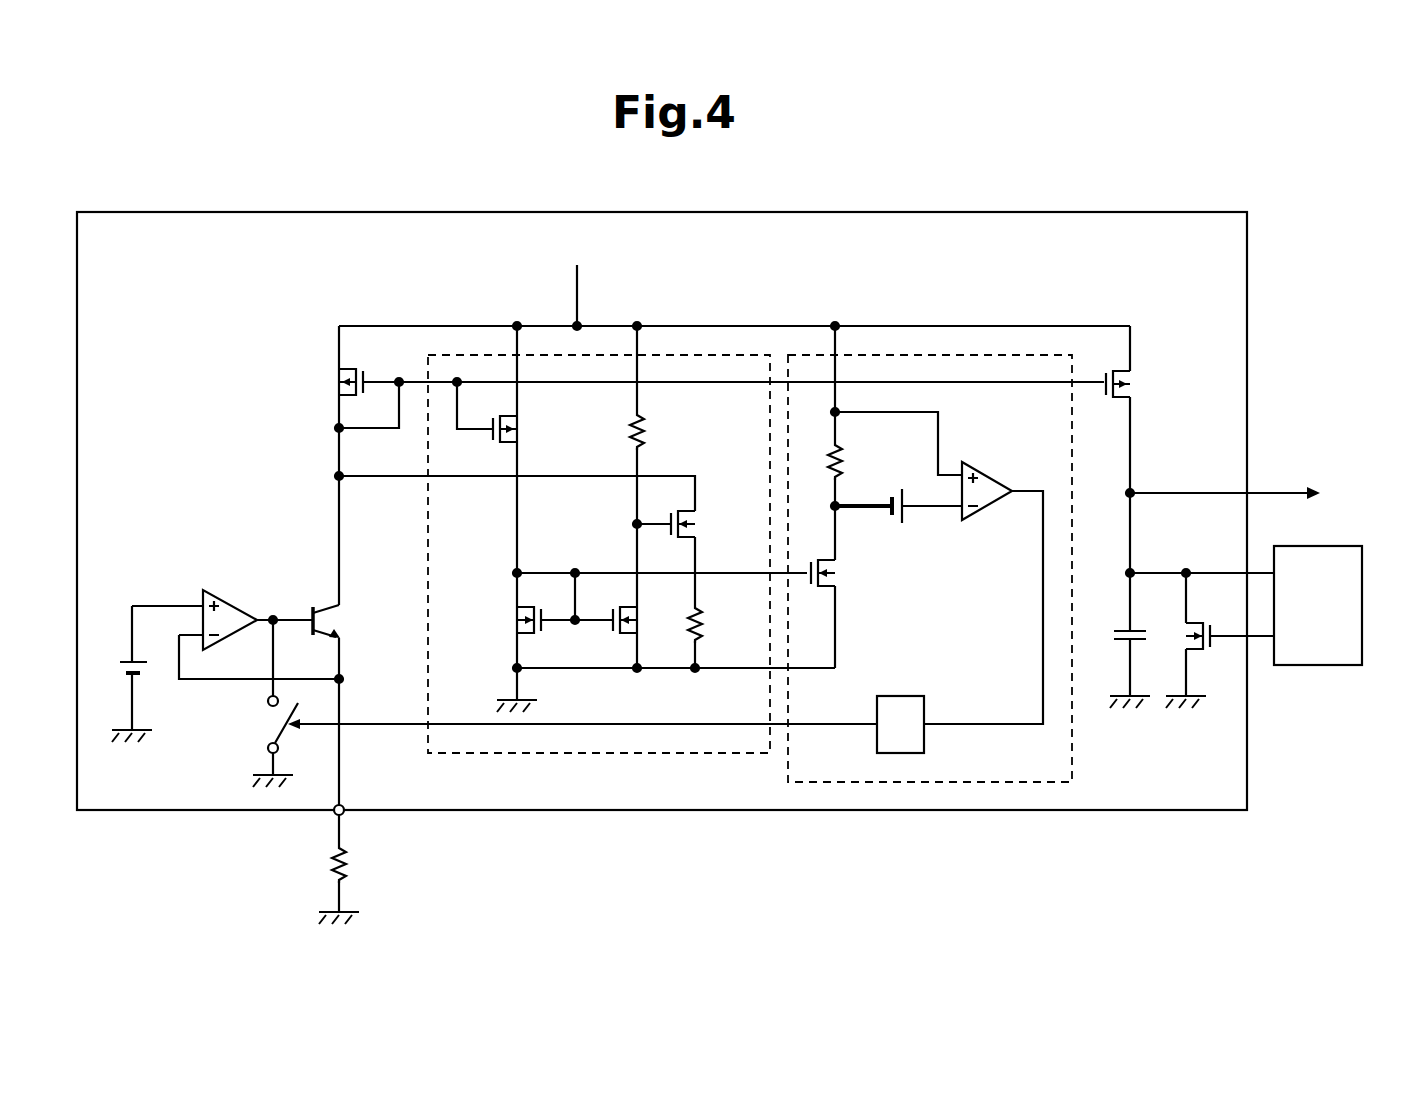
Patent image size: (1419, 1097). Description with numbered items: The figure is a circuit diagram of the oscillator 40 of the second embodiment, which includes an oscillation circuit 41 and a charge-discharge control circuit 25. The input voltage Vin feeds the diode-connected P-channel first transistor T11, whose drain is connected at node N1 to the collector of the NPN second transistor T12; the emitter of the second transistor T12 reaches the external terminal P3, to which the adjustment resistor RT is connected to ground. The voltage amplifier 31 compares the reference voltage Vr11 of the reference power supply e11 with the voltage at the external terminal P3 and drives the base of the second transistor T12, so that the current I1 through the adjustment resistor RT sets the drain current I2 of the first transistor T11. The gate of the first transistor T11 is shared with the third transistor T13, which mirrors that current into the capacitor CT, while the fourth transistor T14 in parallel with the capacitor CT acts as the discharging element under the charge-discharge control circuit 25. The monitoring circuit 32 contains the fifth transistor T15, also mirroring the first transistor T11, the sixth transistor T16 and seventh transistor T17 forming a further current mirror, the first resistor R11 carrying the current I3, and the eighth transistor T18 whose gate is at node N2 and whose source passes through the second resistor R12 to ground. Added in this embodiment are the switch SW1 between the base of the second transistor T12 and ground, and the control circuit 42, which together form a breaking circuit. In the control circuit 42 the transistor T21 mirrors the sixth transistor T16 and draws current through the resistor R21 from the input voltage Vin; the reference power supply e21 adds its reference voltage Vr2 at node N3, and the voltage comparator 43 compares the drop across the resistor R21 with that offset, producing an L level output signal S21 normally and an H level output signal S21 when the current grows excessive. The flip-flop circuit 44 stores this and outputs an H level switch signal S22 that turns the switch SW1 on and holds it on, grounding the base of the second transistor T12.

The oscillator 40 is at (1353, 348).
The oscillation circuit 41 is at (1247, 372).
The charge-discharge control circuit 25 is at (1340, 546).
The voltage amplifier 31 is at (236, 590).
The monitoring circuit 32 is at (735, 355).
The control circuit (switch control circuit) 42 is at (1035, 355).
The voltage comparator 43 is at (989, 469).
The flip-flop circuit 44 is at (906, 696).
The first transistor T11 is at (337, 378).
The second transistor T12 is at (337, 605).
The third transistor T13 is at (1132, 376).
The fourth transistor T14 is at (1214, 648).
The fifth transistor T15 is at (505, 437).
The sixth transistor T16 is at (510, 629).
The seventh transistor T17 is at (612, 631).
The eighth transistor T18 is at (690, 520).
The transistor T21 is at (838, 586).
The first resistor R11 is at (647, 427).
The second resistor R12 is at (696, 645).
The resistor R21 is at (843, 447).
The adjustment resistor RT is at (346, 860).
The capacitor CT is at (1123, 630).
The switch SW1 is at (273, 736).
The external terminal P3 is at (331, 816).
The node N1 is at (339, 476).
The node N2 is at (637, 524).
The node N3 is at (838, 512).
The reference power supply e11 is at (130, 669).
The reference power supply e21 is at (905, 520).
The reference voltage Vr11 is at (161, 617).
The reference voltage Vr2 is at (918, 489).
The input voltage Vin is at (734, 281).
The current I1 is at (353, 770).
The drain current I2 is at (325, 420).
The current I3 is at (617, 437).
The output signal S21 is at (993, 595).
The switch signal S22 is at (582, 712).